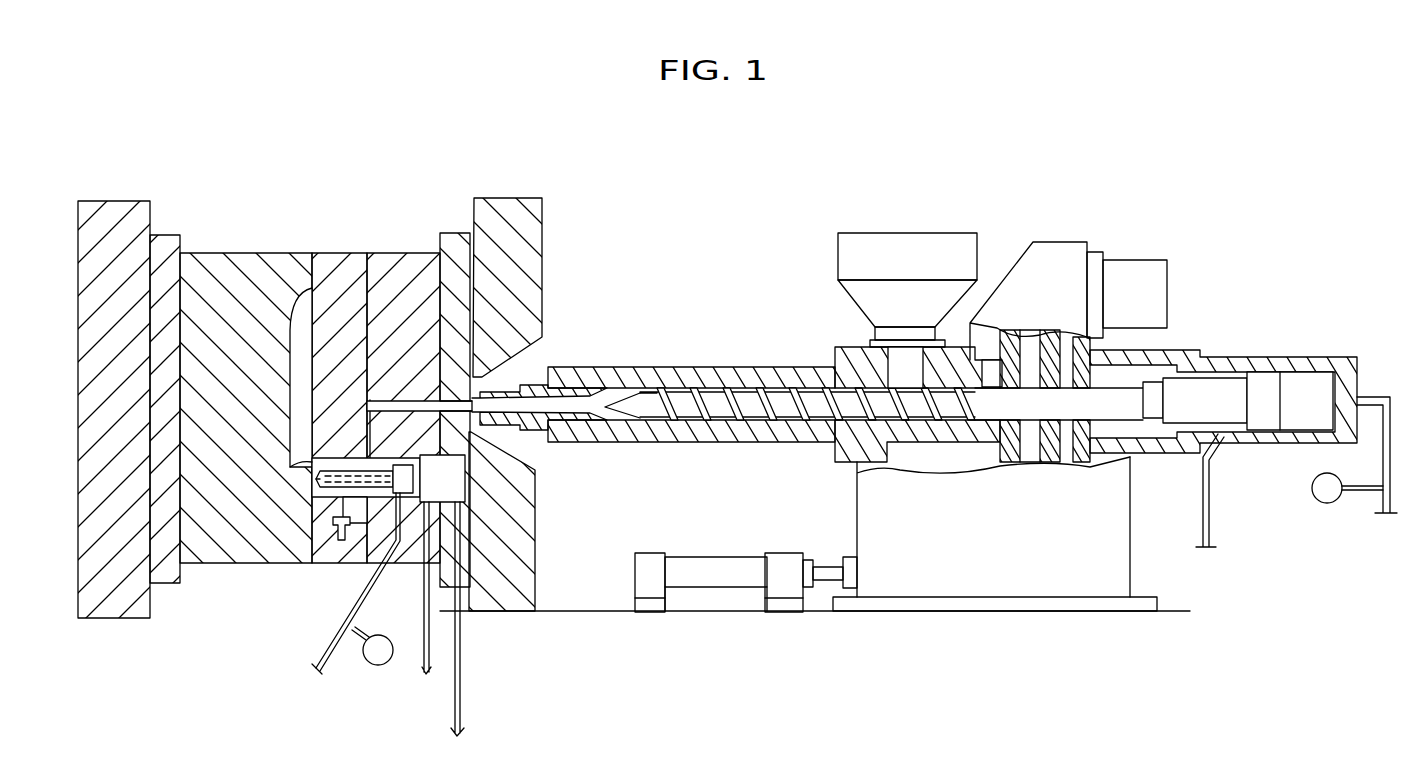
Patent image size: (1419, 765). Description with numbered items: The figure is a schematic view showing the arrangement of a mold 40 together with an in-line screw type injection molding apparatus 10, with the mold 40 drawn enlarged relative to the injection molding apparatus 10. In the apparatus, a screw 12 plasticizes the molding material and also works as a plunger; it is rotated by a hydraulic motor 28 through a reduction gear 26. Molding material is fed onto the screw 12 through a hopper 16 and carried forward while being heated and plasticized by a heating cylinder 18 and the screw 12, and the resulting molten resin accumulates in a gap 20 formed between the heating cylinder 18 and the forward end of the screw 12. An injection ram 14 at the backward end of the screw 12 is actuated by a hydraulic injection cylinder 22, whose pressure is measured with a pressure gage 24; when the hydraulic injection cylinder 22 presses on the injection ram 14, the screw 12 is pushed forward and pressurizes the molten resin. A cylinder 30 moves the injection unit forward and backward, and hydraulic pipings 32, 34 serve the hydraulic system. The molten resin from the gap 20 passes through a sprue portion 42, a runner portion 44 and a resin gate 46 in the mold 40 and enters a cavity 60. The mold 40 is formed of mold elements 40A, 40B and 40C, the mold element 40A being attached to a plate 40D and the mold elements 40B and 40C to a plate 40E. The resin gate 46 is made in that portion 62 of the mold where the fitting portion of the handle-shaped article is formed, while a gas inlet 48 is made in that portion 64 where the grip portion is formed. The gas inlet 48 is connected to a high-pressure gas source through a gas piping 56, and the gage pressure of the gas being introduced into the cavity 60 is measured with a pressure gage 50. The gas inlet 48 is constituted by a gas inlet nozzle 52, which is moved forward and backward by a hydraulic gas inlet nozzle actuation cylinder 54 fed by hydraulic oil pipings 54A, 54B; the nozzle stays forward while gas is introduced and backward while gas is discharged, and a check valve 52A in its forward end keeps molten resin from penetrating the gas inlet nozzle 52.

The injection molding apparatus 10 is at (918, 395).
The screw 12 is at (720, 390).
The injection ram 14 is at (1262, 375).
The hopper 16 is at (953, 233).
The heating cylinder 18 is at (597, 372).
The gap 20 is at (597, 413).
The hydraulic injection cylinder 22 is at (1295, 360).
The pressure gage 24 is at (1318, 500).
The reduction gear 26 is at (1050, 463).
The hydraulic motor 28 is at (1072, 242).
The cylinder 30 is at (720, 588).
The hydraulic piping 32 is at (1378, 508).
The hydraulic piping 34 is at (1210, 540).
The mold 40 is at (333, 435).
The mold element 40A is at (274, 256).
The mold element 40B is at (355, 256).
The mold element 40C is at (412, 262).
The plate 40D is at (120, 205).
The plate 40E is at (512, 200).
The sprue portion 42 is at (404, 408).
The runner portion 44 is at (357, 428).
The resin gate 46 is at (347, 538).
The gas inlet 48 is at (318, 480).
The pressure gage 50 is at (388, 636).
The gas inlet nozzle 52 is at (320, 472).
The check valve 52A is at (298, 474).
The hydraulic gas inlet nozzle actuation cylinder 54 is at (465, 490).
The hydraulic oil piping 54A is at (430, 662).
The hydraulic oil piping 54B is at (461, 705).
The gas piping 56 is at (322, 669).
The cavity 60 is at (298, 377).
The portion of the mold 62 is at (342, 603).
The portion of the mold 64 is at (297, 470).